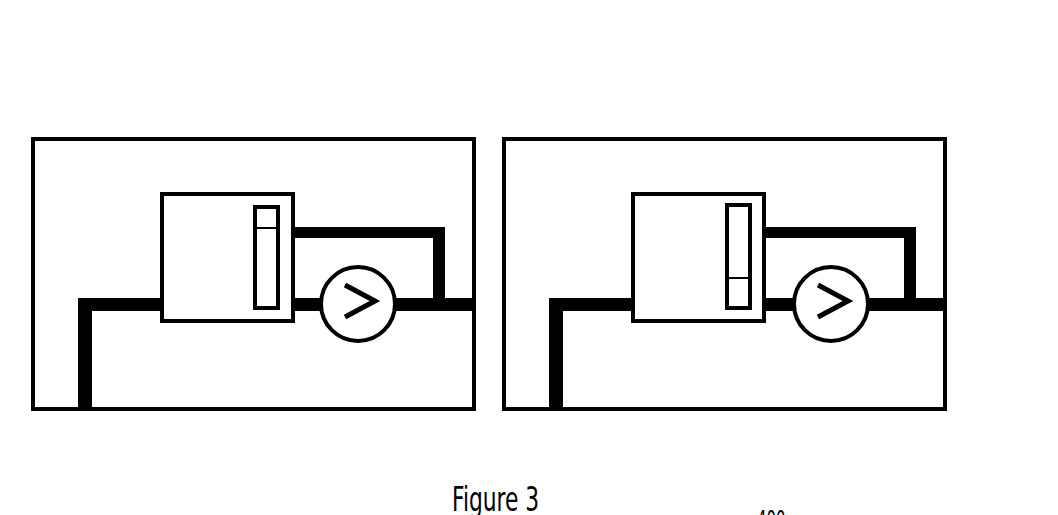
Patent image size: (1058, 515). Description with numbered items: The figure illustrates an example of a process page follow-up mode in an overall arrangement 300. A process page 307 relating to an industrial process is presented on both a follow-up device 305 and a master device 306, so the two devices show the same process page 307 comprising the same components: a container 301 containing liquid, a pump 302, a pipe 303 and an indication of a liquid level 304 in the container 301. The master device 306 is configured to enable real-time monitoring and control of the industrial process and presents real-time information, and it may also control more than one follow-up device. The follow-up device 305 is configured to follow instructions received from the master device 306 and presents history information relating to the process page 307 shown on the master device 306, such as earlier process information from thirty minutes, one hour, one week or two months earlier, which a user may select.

The cooling system 300 is at (724, 65).
The container 301 is at (161, 227).
The pump 302 is at (333, 337).
The pipe 303 is at (92, 386).
The indication of a liquid level 304 is at (255, 228).
The follow-up device 305 is at (275, 139).
The master device 306 is at (767, 139).
The process page 307 is at (80, 178).